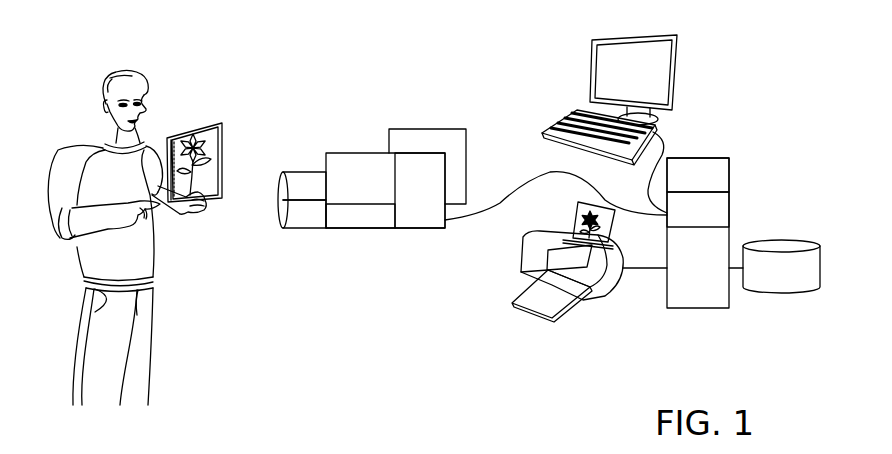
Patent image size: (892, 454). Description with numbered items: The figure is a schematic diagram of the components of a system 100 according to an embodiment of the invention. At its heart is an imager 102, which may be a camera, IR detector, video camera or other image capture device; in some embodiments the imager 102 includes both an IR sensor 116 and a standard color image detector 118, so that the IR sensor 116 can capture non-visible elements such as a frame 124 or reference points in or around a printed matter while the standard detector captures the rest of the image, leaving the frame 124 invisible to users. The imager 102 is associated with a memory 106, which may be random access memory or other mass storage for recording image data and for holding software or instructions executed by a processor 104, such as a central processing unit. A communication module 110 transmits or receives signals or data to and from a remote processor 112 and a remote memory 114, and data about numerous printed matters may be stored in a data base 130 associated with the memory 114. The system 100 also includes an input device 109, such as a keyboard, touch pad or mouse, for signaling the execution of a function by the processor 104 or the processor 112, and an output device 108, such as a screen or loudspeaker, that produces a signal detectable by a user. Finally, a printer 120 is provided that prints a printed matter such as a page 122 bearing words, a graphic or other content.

The system 100 is at (497, 75).
The imager 102 is at (360, 153).
The processor 104 is at (367, 228).
The memory 106 is at (426, 228).
The output device 108 is at (676, 58).
The input device 109 is at (663, 131).
The communication module 110 is at (426, 129).
The remote processor 112 is at (729, 172).
The remote memory 114 is at (729, 205).
The IR sensor 116 is at (296, 172).
The standard color image detector 118 is at (308, 222).
The printer 120 is at (612, 293).
The page 122 is at (210, 133).
The frame 124 is at (222, 147).
The data base 130 is at (820, 295).